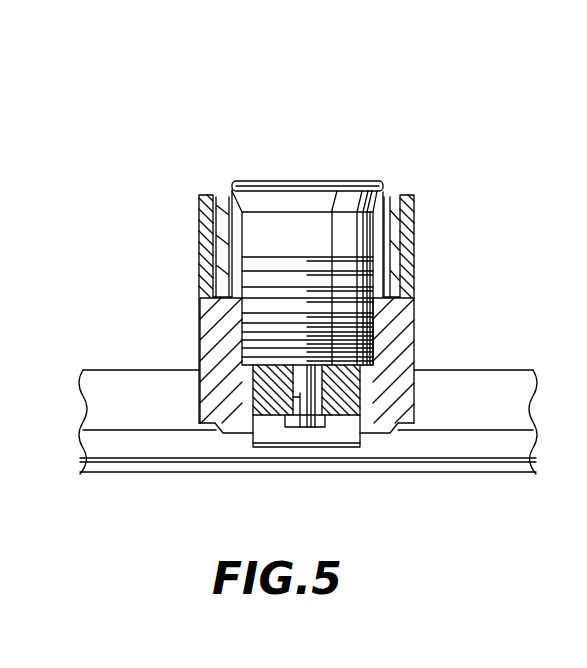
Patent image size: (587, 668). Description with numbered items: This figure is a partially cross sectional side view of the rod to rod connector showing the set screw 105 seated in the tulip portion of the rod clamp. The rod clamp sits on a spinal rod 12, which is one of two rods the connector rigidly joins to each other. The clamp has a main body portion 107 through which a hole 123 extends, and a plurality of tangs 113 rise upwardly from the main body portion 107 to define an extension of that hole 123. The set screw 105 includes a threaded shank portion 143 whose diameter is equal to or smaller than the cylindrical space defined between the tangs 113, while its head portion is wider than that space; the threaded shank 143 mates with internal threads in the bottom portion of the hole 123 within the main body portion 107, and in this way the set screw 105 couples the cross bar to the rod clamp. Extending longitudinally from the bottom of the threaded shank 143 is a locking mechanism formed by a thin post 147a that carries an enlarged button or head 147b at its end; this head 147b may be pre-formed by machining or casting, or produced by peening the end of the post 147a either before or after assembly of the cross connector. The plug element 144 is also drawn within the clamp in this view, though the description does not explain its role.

The set screw 105 is at (321, 277).
The spinal rod 12 is at (100, 387).
The tangs 113 is at (220, 193).
The threaded shank portion 143 is at (322, 232).
The plug 144 is at (350, 182).
The main body portion 107 is at (200, 298).
The hole 123 is at (372, 388).
The post 147a is at (292, 397).
The head 147b is at (305, 390).